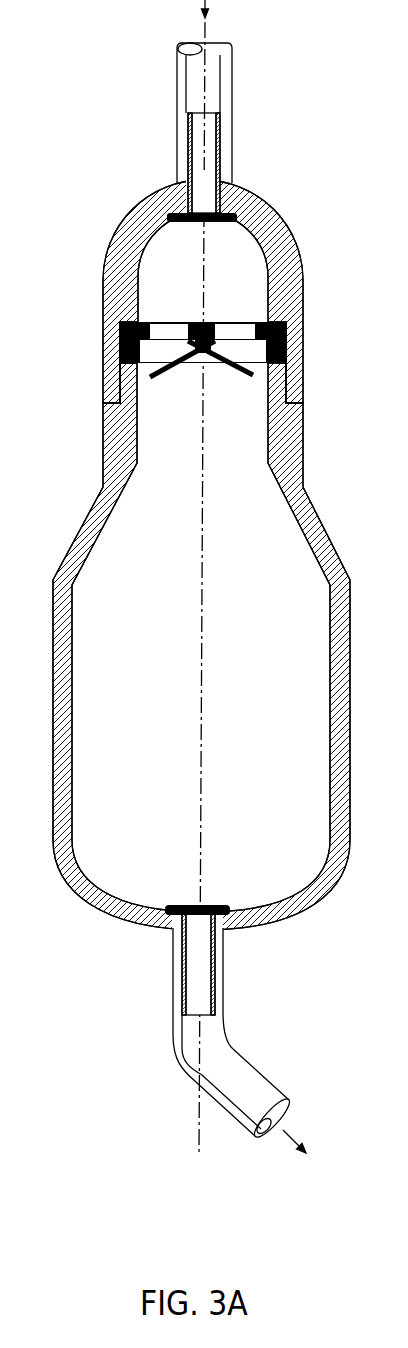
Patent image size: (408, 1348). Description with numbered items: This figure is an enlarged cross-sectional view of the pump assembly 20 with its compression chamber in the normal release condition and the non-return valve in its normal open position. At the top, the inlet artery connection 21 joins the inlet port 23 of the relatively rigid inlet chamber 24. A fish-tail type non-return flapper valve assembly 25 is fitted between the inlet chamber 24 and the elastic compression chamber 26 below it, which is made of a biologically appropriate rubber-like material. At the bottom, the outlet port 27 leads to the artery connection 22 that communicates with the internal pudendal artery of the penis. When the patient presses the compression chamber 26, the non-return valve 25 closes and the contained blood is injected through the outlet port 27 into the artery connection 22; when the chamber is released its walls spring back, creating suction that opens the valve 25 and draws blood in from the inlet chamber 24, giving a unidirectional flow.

The pump assembly 20 is at (84, 1163).
The inlet artery connection 21 is at (226, 67).
The artery connection 22 is at (262, 1073).
The inlet port 23 is at (211, 143).
The inlet chamber 24 is at (158, 243).
The non-return valve assembly 25 is at (237, 347).
The compression chamber 26 is at (313, 533).
The outlet port 27 is at (218, 960).